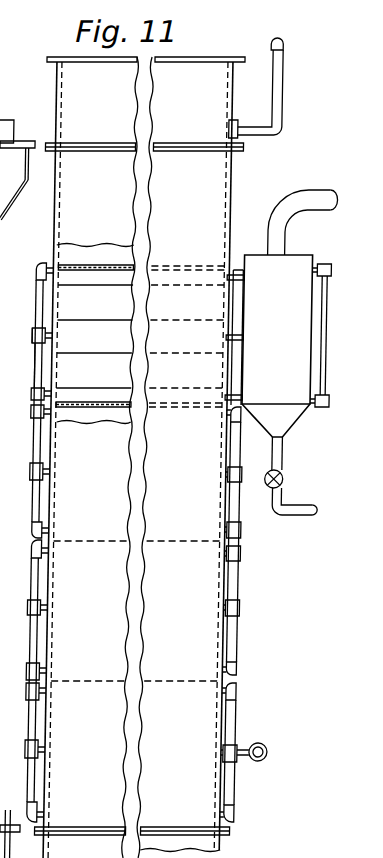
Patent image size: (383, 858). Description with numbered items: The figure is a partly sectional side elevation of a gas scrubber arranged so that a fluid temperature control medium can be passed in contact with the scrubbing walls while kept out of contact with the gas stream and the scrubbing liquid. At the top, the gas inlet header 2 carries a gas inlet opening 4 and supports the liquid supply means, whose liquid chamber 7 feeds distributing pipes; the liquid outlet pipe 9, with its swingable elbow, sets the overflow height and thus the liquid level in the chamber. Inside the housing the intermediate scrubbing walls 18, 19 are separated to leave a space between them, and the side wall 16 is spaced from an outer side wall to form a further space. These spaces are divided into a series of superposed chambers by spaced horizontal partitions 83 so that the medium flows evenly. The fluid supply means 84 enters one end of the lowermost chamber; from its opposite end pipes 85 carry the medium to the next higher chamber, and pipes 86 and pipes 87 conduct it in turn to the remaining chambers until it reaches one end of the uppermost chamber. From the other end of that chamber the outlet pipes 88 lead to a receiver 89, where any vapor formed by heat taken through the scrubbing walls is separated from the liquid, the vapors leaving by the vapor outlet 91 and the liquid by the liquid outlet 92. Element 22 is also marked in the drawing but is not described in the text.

The gas inlet header 2 is at (5, 222).
The gas inlet opening 4 is at (1, 118).
The liquid chamber 7 is at (78, 88).
The liquid outlet pipe 9 is at (284, 100).
The side wall 16 is at (79, 287).
The intermediate scrubbing wall 18 is at (10, 817).
The intermediate scrubbing wall 19 is at (17, 365).
The pipe fitting 22 is at (16, 335).
The horizontal partitions 83 is at (84, 408).
The fluid supply means 84 is at (251, 721).
The pipes 85 is at (42, 715).
The pipes 86 is at (250, 570).
The pipes 87 is at (40, 432).
The outlet pipes 88 is at (241, 281).
The receiver 89 is at (286, 346).
The vapor outlet 91 is at (288, 198).
The liquid outlet 92 is at (293, 517).